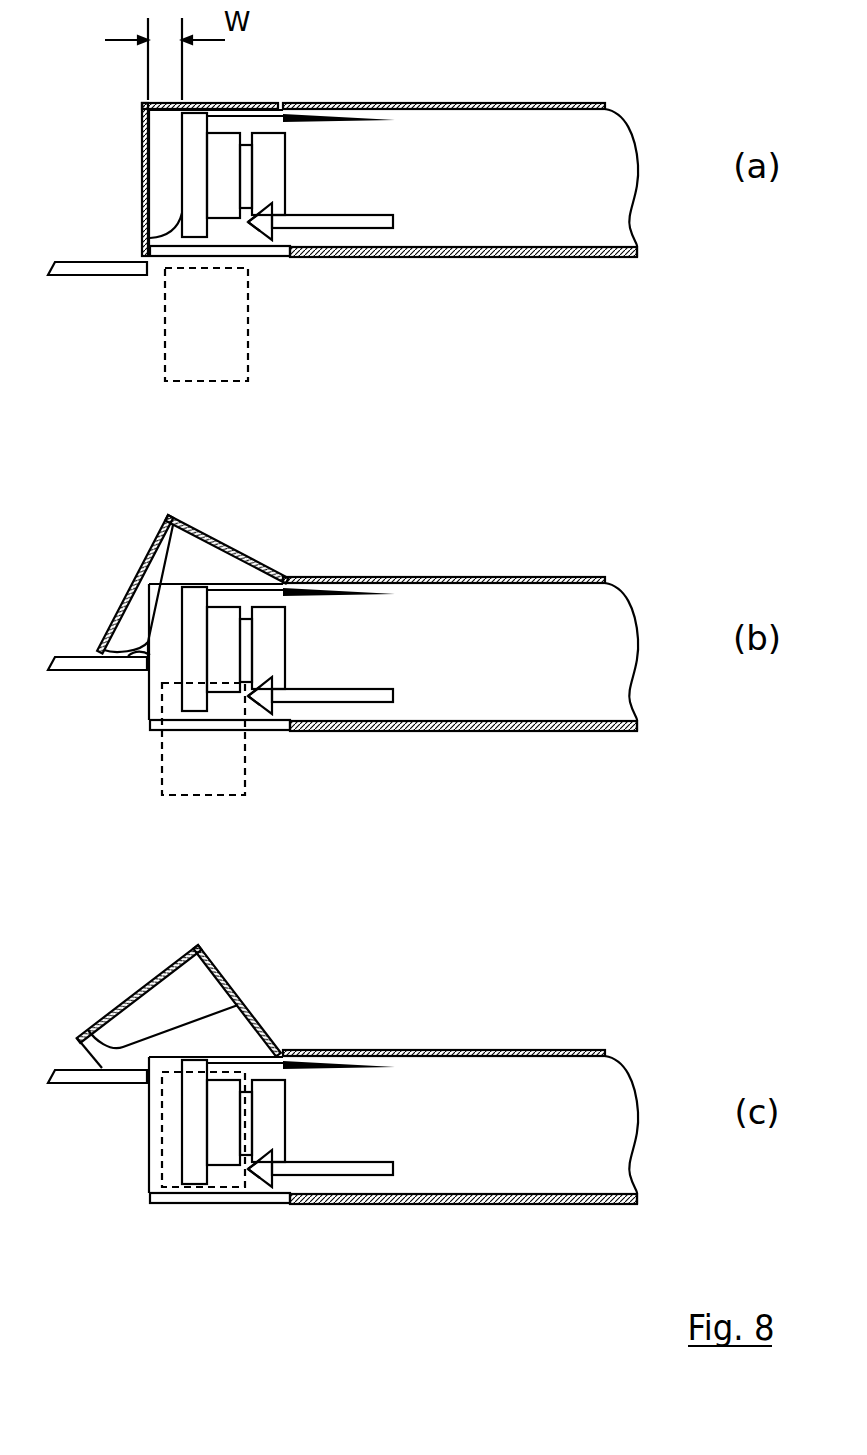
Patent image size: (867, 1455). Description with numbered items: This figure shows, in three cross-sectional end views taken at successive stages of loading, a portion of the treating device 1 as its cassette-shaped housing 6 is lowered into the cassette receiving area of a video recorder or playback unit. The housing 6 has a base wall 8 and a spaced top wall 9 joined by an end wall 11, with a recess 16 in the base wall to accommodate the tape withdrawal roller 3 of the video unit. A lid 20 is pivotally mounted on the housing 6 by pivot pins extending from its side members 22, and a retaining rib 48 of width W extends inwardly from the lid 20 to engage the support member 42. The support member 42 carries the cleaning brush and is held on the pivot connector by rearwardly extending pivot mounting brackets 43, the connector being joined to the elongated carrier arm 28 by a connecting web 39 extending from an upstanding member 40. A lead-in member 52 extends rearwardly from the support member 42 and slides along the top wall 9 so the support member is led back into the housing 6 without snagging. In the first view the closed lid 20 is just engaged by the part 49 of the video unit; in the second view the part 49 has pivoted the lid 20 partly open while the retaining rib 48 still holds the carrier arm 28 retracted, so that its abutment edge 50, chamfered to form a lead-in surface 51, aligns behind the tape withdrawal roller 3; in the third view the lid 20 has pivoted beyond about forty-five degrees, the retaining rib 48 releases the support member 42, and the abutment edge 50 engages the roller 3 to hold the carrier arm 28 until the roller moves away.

The treating device 1 is at (487, 634).
The tape withdrawal roller 3 is at (238, 375).
The housing 6 is at (587, 258).
The base wall 8 is at (500, 257).
The top wall 9 is at (487, 104).
The end wall 11 is at (617, 171).
The recess 16 is at (293, 254).
The lid 20 is at (142, 144).
The side member 22 is at (206, 558).
The carrier arm 28 is at (347, 218).
The connecting web 39 is at (245, 168).
The upstanding member 40 is at (277, 172).
The support member 42 is at (196, 128).
The pivot mounting brackets 43 is at (227, 148).
The retaining rib 48 is at (163, 187).
The part 49 is at (122, 277).
The abutment edge 50 is at (258, 232).
The lead-in surface 51 is at (248, 223).
The lead-in member 52 is at (357, 118).